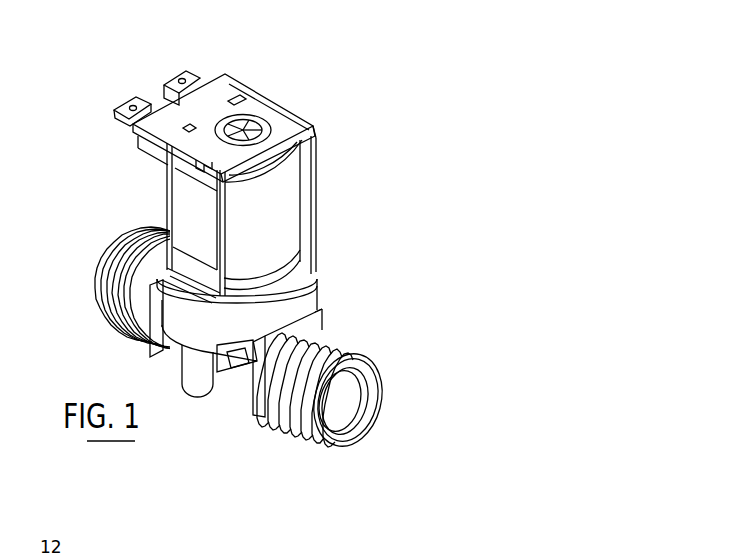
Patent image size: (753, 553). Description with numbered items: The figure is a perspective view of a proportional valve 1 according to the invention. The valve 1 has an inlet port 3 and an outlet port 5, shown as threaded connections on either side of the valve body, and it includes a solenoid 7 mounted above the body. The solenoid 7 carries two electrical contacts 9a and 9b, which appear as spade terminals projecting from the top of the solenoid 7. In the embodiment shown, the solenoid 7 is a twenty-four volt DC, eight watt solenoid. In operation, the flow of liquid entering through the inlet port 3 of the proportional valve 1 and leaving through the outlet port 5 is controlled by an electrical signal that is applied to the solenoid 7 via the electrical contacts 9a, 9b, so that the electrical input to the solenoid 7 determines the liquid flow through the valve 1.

The proportional valve 1 is at (352, 253).
The inlet port 3 is at (347, 397).
The outlet port 5 is at (114, 248).
The solenoid 7 is at (278, 215).
The electrical contact 9a is at (122, 100).
The electrical contact 9b is at (177, 78).